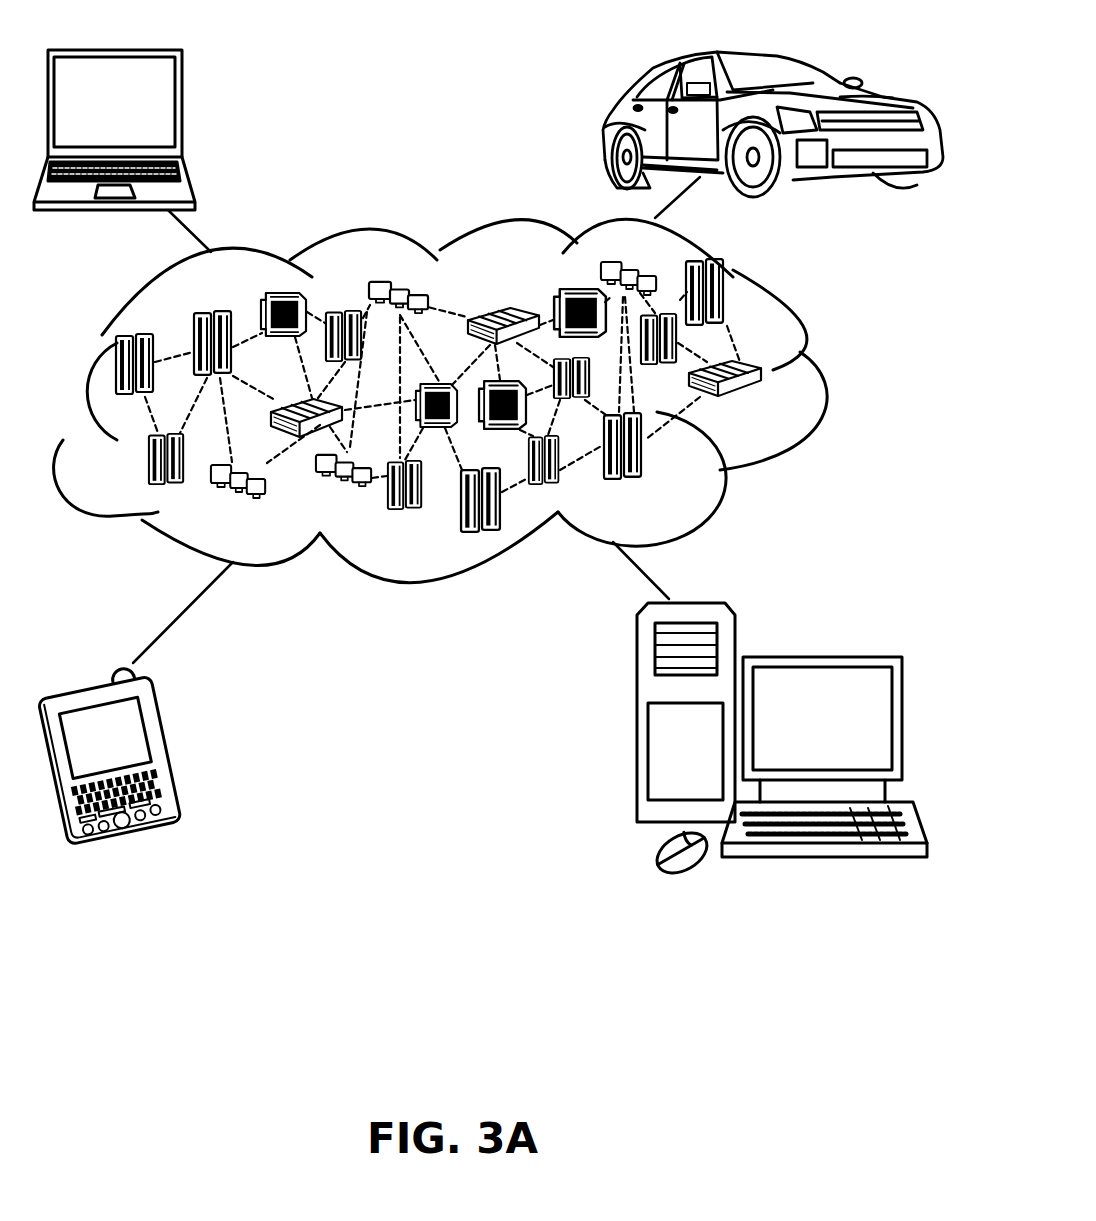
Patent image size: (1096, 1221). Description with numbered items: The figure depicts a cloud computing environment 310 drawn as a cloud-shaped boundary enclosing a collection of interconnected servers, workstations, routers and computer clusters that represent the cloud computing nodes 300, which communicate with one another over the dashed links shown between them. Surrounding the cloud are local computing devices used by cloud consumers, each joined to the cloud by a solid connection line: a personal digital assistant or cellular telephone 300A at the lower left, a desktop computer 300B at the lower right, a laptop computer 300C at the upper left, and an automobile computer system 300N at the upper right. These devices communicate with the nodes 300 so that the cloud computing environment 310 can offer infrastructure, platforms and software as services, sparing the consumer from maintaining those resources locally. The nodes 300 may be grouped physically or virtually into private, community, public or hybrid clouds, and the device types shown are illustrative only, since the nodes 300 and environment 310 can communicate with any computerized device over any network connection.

The cloud computing node 300 is at (766, 403).
The cloud computing environment 310 is at (822, 376).
The personal digital assistant or cellular telephone 300A is at (172, 748).
The desktop computer 300B is at (820, 657).
The laptop computer 300C is at (185, 110).
The automobile computer system 300N is at (607, 125).